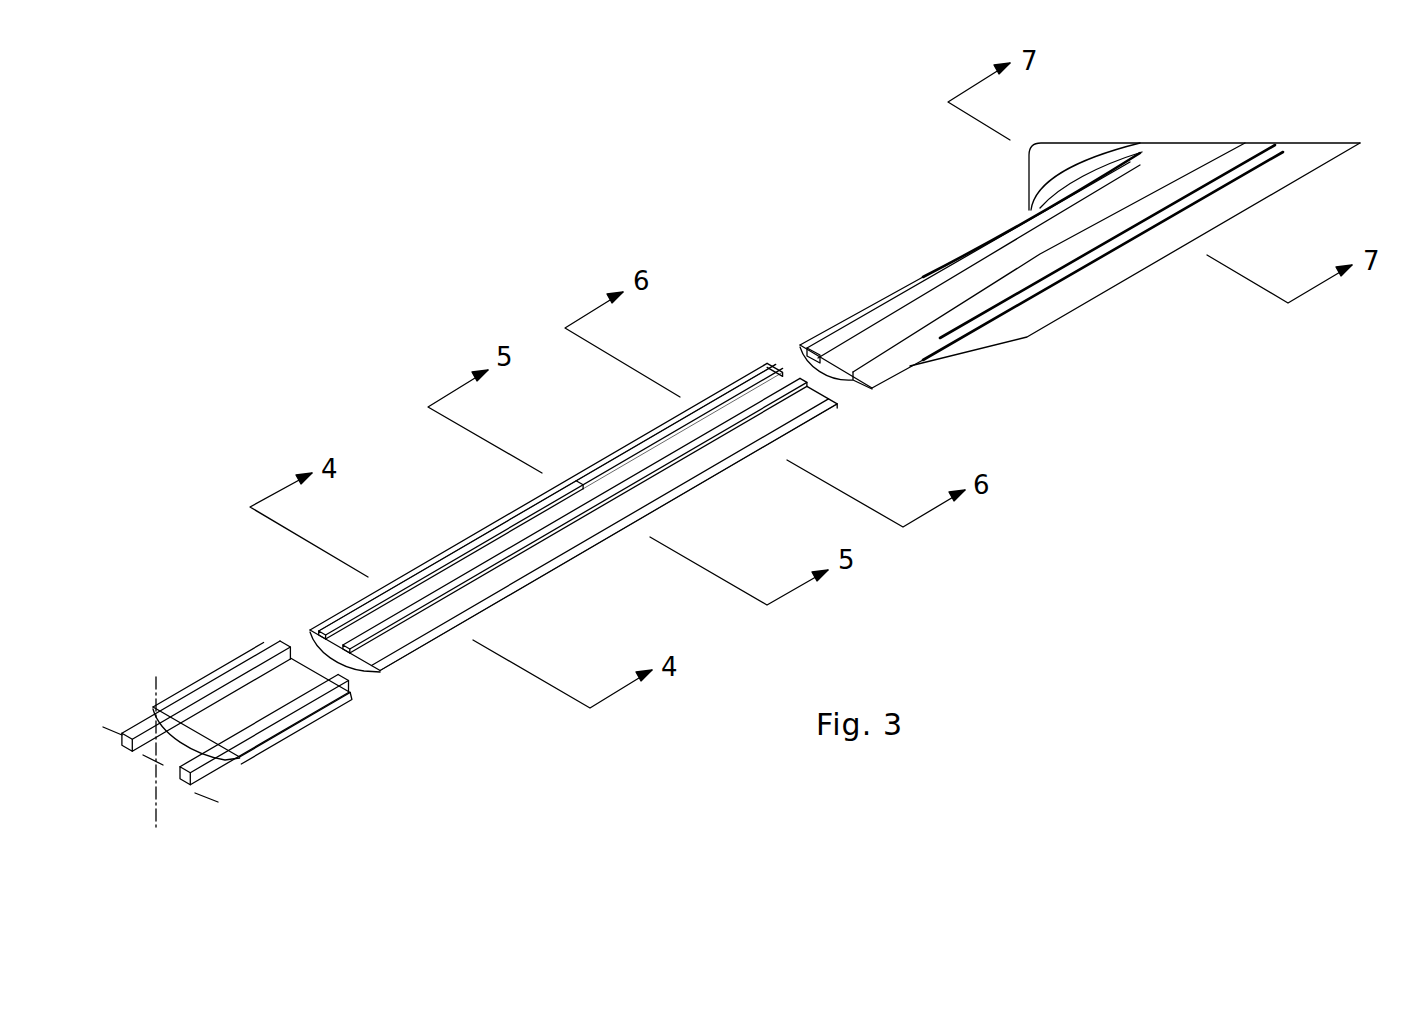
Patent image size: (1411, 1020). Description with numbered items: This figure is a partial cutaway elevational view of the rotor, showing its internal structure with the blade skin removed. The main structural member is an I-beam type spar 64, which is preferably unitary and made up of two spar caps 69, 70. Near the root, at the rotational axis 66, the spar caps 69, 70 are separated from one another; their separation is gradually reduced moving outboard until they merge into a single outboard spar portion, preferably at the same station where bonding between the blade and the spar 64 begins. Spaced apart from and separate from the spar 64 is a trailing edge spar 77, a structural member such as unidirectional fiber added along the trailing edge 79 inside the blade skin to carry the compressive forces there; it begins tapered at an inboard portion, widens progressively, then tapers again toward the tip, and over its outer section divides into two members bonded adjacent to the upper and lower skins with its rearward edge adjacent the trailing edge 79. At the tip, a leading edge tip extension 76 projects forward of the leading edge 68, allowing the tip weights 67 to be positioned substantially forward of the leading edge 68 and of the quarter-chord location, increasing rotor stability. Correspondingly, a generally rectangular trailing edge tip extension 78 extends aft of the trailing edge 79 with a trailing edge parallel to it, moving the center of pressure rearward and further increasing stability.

The spar 64 is at (622, 462).
The rotational axis 66 is at (153, 827).
The tip weights 67 is at (1082, 142).
The leading edge 68 is at (773, 381).
The spar cap 69 is at (243, 677).
The spar cap 70 is at (292, 707).
The leading edge tip extension 76 is at (1027, 172).
The trailing edge spar 77 is at (717, 470).
The trailing edge tip extension 78 is at (1140, 272).
The trailing edge 79 is at (588, 552).